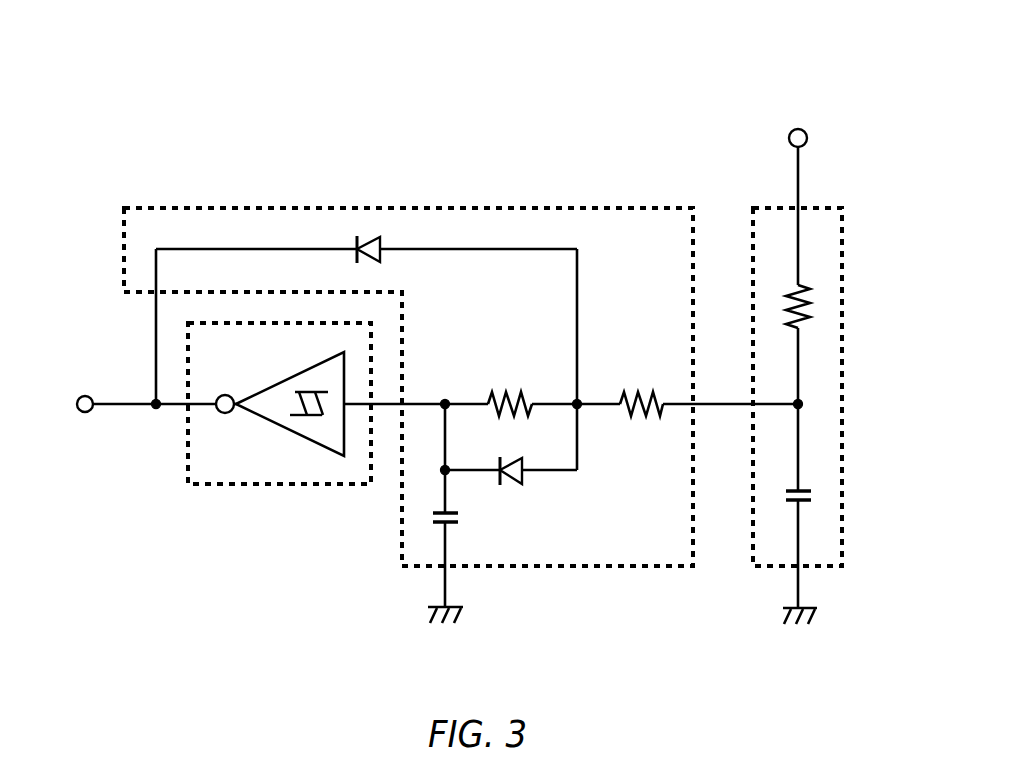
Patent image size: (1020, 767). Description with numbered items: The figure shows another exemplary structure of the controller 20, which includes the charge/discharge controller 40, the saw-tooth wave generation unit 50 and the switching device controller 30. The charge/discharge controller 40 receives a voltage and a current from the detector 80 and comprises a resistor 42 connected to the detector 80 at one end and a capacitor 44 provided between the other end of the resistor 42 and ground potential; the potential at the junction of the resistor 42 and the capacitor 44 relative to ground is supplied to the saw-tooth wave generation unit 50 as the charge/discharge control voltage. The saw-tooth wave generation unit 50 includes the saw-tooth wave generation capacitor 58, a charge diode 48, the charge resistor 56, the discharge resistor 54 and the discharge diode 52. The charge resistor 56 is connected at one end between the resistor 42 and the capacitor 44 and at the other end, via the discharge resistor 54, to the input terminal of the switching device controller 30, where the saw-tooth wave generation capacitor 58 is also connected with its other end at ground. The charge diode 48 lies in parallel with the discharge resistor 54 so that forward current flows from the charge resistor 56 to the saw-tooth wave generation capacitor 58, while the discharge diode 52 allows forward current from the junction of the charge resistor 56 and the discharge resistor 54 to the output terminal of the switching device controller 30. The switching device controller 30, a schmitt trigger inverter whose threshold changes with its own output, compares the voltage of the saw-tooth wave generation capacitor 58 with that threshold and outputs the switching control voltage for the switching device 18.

The controller 20 is at (886, 42).
The switching device 18 is at (67, 405).
The switching device controller 30 is at (285, 484).
The charge/discharge controller 40 is at (845, 237).
The resistor 42 is at (810, 318).
The capacitor 44 is at (812, 498).
The charge diode 48 is at (525, 480).
The saw-tooth wave generation unit 50 is at (412, 208).
The discharge diode 52 is at (383, 258).
The discharge resistor 54 is at (505, 392).
The charge resistor 56 is at (638, 392).
The saw-tooth wave generation capacitor 58 is at (460, 521).
The detector 80 is at (797, 120).